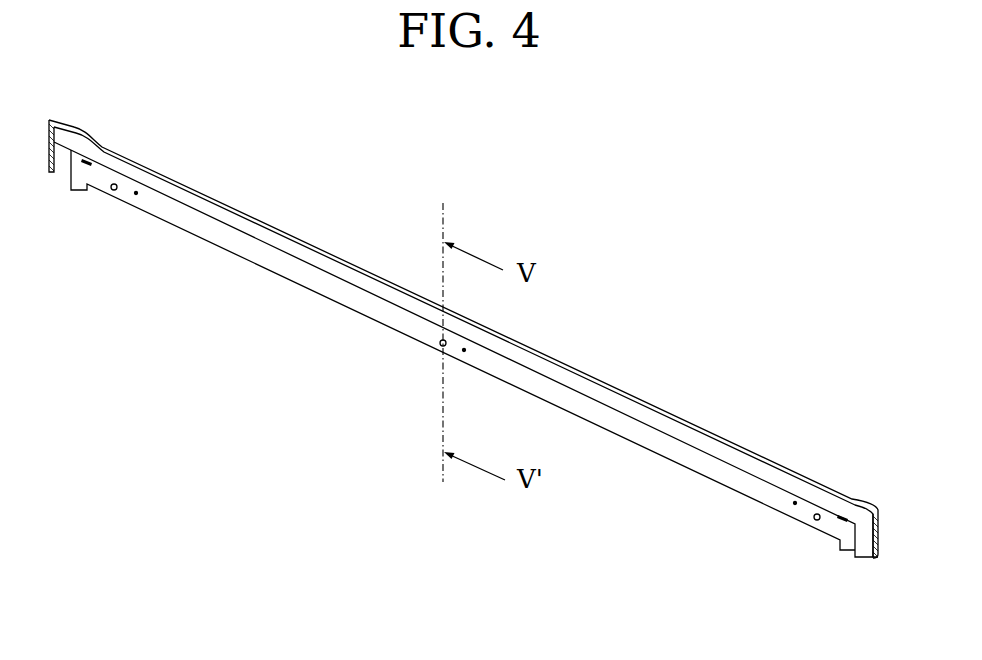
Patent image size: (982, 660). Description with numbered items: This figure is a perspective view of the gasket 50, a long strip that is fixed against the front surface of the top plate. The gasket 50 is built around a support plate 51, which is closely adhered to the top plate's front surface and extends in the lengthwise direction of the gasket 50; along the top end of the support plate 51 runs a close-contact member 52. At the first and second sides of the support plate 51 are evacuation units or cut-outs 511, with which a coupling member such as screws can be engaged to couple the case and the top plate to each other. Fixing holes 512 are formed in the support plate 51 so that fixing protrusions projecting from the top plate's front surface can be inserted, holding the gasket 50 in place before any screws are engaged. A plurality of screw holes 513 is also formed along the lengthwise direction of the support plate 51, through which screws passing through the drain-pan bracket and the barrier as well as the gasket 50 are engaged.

The gasket 50 is at (146, 148).
The support plate 51 is at (738, 480).
The close-contact member 52 is at (592, 392).
The cut-outs 511 is at (66, 173).
The fixing holes 512 is at (90, 158).
The screw holes 513 is at (114, 191).